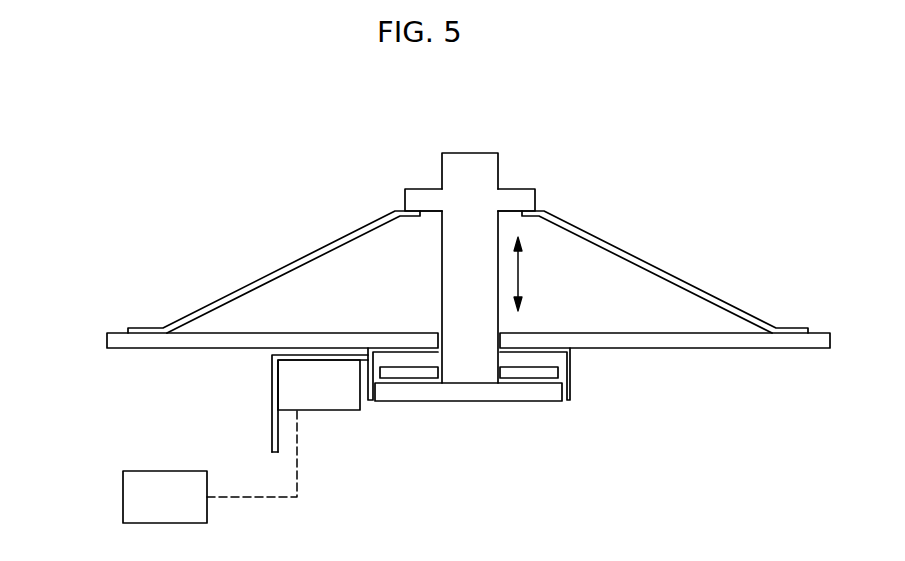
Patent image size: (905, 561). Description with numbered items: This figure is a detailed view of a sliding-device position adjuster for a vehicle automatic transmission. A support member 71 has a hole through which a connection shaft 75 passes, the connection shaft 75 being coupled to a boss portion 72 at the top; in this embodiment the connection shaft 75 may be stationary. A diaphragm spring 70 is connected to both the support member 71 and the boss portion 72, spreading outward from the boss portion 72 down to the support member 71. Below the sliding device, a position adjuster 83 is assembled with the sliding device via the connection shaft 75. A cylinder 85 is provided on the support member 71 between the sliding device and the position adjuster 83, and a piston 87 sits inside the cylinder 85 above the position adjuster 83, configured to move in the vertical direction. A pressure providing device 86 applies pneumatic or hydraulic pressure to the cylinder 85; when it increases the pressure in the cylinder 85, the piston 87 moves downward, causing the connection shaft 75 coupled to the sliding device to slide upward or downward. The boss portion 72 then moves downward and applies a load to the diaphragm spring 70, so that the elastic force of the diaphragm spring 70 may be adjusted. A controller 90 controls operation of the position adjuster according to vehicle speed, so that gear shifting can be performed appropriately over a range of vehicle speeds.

The diaphragm spring 70 is at (597, 237).
The support member 71 is at (820, 342).
The boss portion 72 is at (518, 197).
The connection shaft 75 is at (475, 165).
The position adjuster 83 is at (463, 392).
The cylinder 85 is at (553, 359).
The pressure providing device 86 is at (343, 398).
The piston 87 is at (537, 373).
The controller 90 is at (123, 503).